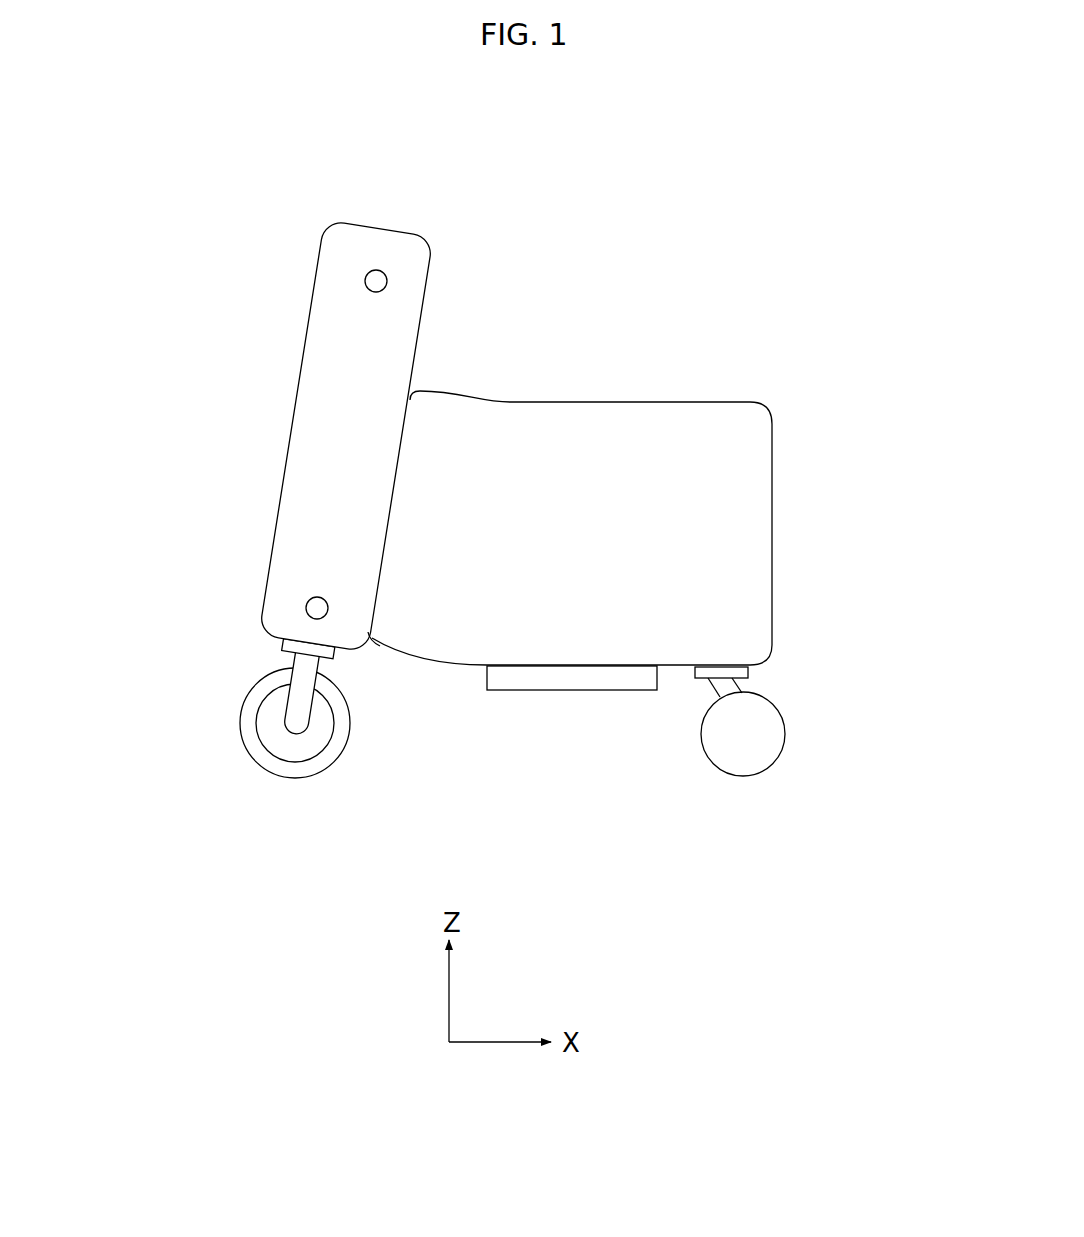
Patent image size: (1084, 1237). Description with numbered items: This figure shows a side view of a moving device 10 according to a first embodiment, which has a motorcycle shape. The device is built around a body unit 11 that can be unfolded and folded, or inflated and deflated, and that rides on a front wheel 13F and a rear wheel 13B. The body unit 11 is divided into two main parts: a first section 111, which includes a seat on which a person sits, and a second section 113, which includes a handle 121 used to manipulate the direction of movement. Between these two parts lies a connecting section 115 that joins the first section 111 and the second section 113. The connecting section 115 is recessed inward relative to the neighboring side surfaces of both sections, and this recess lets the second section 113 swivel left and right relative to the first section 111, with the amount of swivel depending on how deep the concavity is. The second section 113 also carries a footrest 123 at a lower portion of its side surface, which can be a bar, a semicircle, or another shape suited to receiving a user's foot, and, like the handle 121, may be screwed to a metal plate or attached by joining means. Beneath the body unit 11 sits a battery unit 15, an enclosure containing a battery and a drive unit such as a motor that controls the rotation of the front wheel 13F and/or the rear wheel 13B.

The moving device 10 is at (823, 109).
The body unit 11 is at (770, 335).
The first section 111 is at (777, 477).
The second section 113 is at (307, 298).
The connecting section 115 is at (368, 645).
The handle 121 is at (375, 265).
The footrest 123 is at (308, 595).
The wheel 13F is at (237, 703).
The wheel 13B is at (788, 728).
The battery unit 15 is at (542, 697).